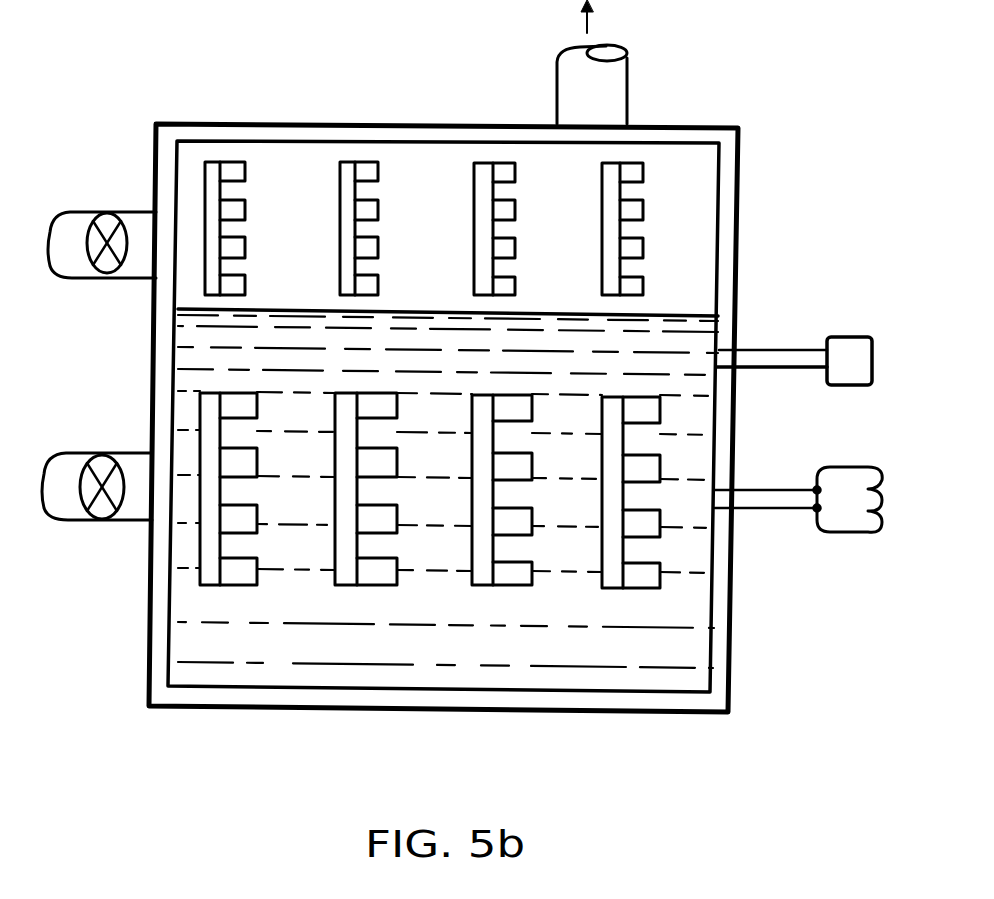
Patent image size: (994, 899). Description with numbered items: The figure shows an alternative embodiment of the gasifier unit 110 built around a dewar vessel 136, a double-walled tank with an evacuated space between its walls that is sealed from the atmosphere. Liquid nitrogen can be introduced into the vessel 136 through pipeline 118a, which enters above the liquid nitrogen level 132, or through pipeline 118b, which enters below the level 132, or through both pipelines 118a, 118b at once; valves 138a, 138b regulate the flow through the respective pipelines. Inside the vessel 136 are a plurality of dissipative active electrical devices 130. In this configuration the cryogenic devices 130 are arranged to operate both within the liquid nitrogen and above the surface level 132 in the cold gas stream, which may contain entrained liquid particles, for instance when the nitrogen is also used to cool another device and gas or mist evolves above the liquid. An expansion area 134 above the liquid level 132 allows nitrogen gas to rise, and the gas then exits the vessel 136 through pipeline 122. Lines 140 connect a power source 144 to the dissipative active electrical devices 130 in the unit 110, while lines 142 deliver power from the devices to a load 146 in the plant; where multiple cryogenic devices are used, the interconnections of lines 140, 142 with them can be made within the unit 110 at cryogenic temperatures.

The gasifier unit 110 is at (778, 122).
The dewar vessel 136 is at (304, 125).
The expansion area 134 is at (454, 196).
The liquid nitrogen level 132 is at (552, 319).
The dissipative active electrical device 130 is at (240, 291).
The pipeline 122 is at (623, 75).
The pipeline 118a is at (73, 212).
The pipeline 118b is at (71, 458).
The valve 138a is at (108, 281).
The valve 138b is at (102, 521).
The lines 140 is at (779, 350).
The power source 144 is at (852, 337).
The lines 142 is at (768, 490).
The load 146 is at (860, 453).